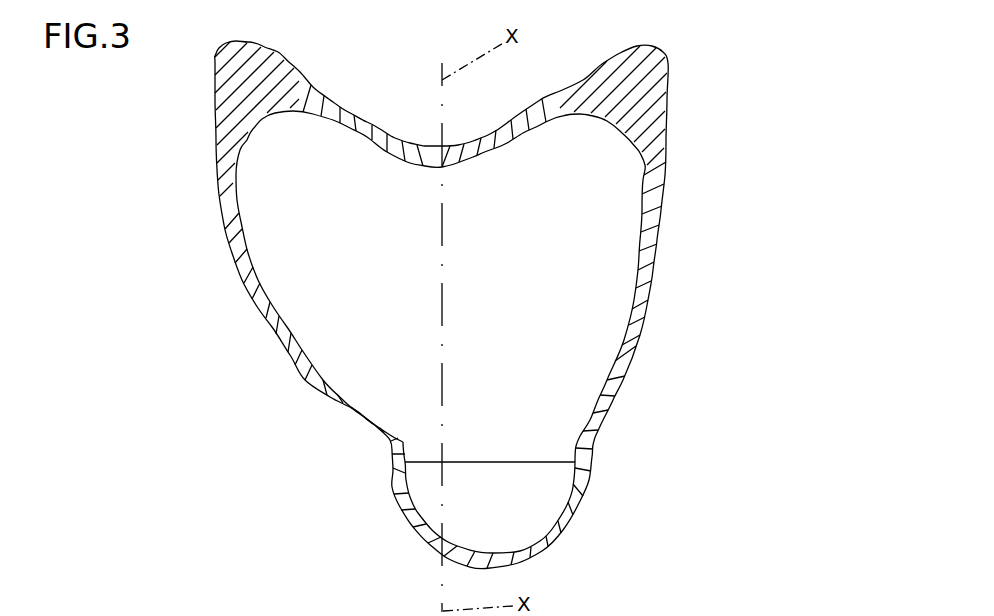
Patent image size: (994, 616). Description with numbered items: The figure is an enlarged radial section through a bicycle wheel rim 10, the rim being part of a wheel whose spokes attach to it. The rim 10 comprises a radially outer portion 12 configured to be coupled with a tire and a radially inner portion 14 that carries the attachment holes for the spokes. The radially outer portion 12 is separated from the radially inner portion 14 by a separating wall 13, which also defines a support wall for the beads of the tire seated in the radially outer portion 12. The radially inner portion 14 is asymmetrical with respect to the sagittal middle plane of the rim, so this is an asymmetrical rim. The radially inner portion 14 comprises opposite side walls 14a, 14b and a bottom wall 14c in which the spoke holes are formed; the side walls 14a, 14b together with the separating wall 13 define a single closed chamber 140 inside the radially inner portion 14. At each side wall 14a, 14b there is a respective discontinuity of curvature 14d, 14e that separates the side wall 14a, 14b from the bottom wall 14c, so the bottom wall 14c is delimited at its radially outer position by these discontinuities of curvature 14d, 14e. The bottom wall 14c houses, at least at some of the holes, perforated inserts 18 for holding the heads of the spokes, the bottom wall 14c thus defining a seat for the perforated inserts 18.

The bicycle wheel rim 10 is at (745, 307).
The radially outer portion 12 is at (692, 71).
The separating wall 13 is at (400, 138).
The radially inner portion 14 is at (718, 253).
The side wall 14a is at (257, 316).
The side wall 14b is at (648, 303).
The bottom wall 14c is at (538, 558).
The discontinuity of curvature 14d is at (372, 461).
The discontinuity of curvature 14e is at (614, 455).
The closed chamber 140 is at (512, 283).
The perforated insert 18 is at (428, 487).